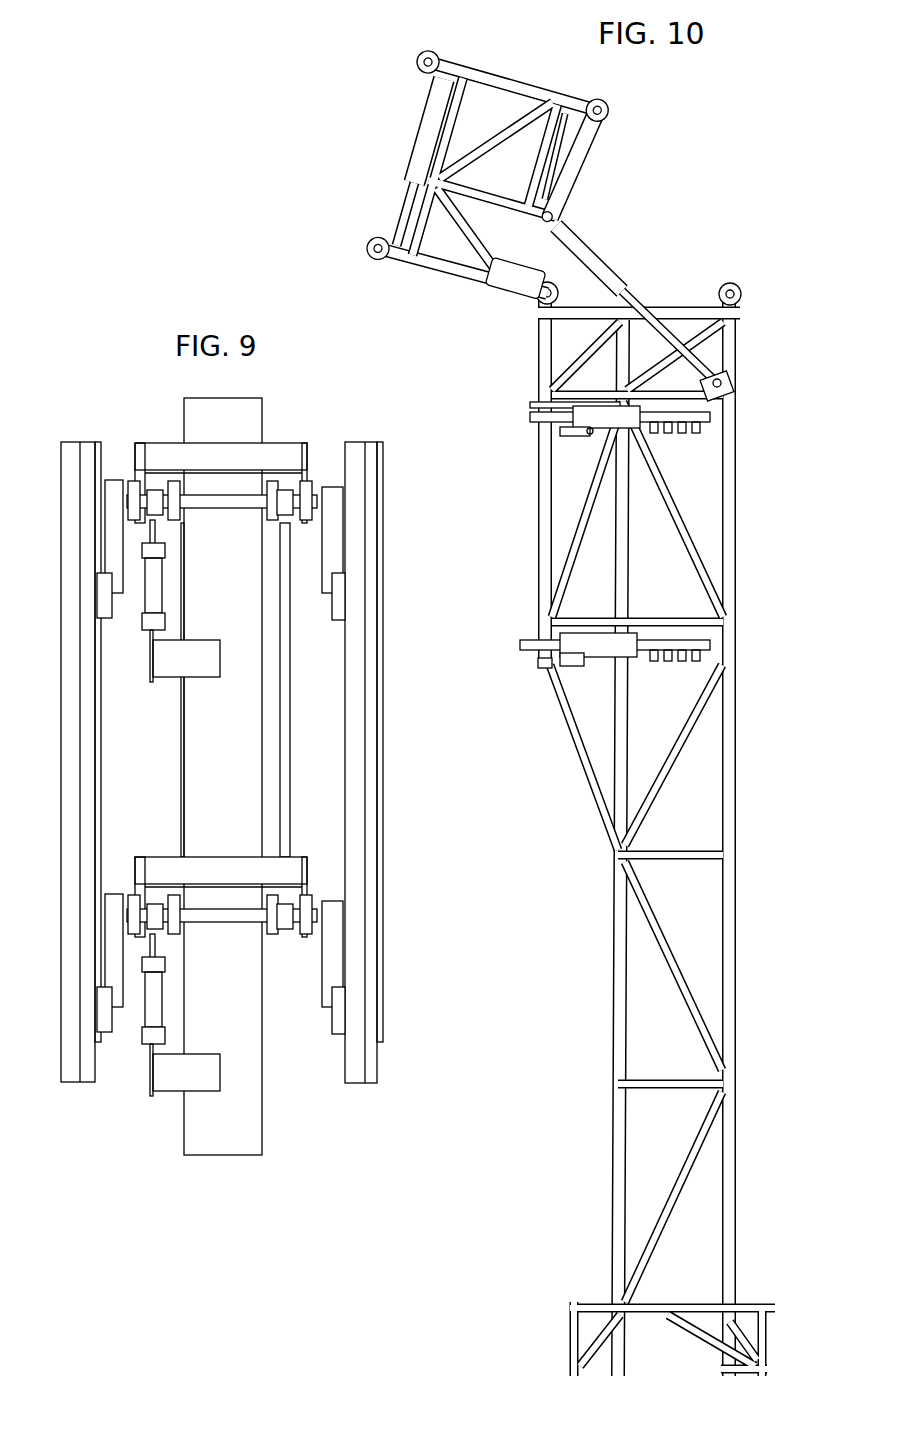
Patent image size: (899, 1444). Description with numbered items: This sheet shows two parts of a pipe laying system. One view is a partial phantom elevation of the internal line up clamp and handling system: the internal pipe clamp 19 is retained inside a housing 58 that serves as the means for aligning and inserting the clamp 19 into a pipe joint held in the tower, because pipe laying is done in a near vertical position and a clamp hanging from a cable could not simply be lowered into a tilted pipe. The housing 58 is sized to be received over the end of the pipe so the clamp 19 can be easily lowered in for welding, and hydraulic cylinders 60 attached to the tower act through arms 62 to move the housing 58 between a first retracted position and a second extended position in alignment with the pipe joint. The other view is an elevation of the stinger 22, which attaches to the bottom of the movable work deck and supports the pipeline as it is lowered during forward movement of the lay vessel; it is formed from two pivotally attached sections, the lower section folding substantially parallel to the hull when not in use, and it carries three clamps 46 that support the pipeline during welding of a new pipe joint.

In FIG. 9, the internal pipe clamp 19 is at (183, 808).
In FIG. 10, the stinger 22 is at (677, 268).
In FIG. 10, the clamps 46 is at (425, 133).
In FIG. 9, the housing 58 is at (181, 719).
In FIG. 9, the hydraulic cylinders 60 is at (150, 607).
In FIG. 9, the arms 62 is at (288, 773).